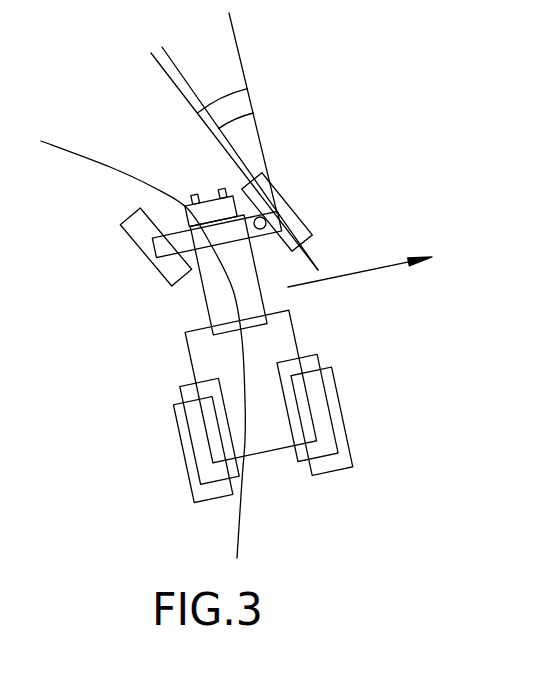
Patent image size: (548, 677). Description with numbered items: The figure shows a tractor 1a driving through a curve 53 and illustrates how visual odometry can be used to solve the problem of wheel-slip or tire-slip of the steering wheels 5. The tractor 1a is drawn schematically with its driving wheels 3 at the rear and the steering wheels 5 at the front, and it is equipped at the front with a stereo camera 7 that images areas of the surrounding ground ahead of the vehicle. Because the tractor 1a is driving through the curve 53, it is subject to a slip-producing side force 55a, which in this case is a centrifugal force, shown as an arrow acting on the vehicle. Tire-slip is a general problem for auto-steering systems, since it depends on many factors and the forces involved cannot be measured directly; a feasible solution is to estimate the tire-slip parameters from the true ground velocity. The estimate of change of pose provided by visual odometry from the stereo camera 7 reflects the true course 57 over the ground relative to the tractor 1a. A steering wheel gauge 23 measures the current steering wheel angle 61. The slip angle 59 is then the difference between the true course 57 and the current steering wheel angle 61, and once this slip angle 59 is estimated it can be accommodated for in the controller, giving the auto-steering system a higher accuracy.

The tractor 1a is at (302, 332).
The driving wheels 3 is at (217, 500).
The steering wheels 5 is at (157, 272).
The stereo camera 7 is at (209, 201).
The steering wheel gauge 23 is at (264, 229).
The curve 53 is at (110, 167).
The side force 55a is at (390, 266).
The true course 57 is at (239, 124).
The slip angle 59 is at (181, 82).
The steering wheel angle 61 is at (215, 95).